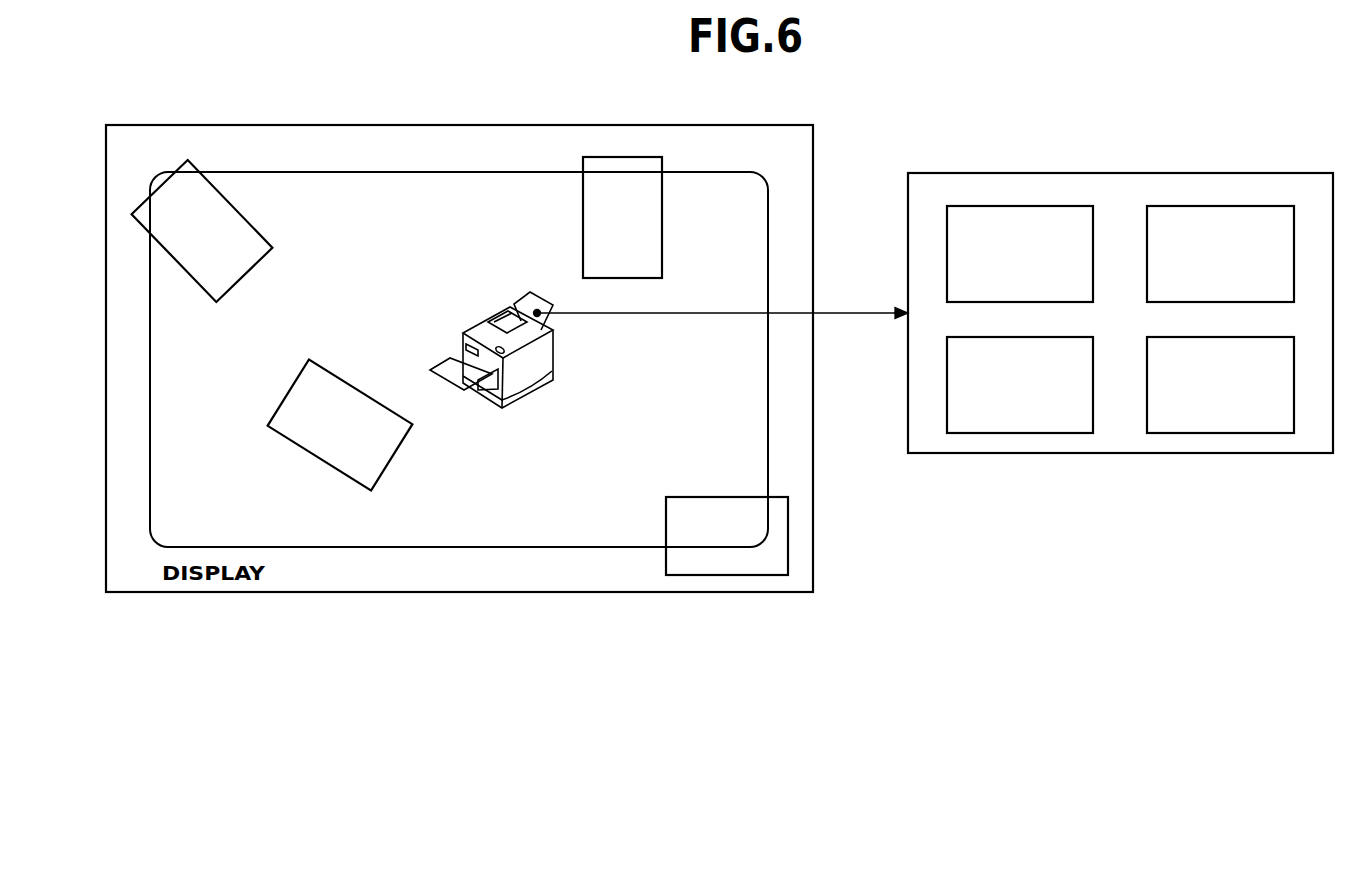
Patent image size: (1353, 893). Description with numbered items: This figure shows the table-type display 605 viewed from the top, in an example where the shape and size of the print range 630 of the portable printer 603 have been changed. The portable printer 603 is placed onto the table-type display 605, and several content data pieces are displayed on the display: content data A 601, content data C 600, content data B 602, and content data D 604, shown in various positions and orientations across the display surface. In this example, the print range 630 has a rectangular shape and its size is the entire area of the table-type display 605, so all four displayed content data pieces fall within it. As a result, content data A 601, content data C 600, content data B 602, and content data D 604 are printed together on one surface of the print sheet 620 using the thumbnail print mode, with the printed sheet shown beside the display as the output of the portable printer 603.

The content data C 600 is at (662, 222).
The content data A 601 is at (226, 194).
The content data B 602 is at (341, 374).
The portable printer 603 is at (483, 320).
The content data D 604 is at (728, 497).
The table-type display 605 is at (357, 125).
The print sheet 620 is at (1075, 173).
The print range 630 is at (520, 546).